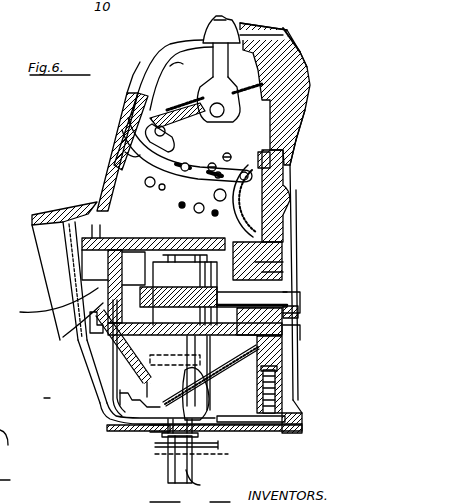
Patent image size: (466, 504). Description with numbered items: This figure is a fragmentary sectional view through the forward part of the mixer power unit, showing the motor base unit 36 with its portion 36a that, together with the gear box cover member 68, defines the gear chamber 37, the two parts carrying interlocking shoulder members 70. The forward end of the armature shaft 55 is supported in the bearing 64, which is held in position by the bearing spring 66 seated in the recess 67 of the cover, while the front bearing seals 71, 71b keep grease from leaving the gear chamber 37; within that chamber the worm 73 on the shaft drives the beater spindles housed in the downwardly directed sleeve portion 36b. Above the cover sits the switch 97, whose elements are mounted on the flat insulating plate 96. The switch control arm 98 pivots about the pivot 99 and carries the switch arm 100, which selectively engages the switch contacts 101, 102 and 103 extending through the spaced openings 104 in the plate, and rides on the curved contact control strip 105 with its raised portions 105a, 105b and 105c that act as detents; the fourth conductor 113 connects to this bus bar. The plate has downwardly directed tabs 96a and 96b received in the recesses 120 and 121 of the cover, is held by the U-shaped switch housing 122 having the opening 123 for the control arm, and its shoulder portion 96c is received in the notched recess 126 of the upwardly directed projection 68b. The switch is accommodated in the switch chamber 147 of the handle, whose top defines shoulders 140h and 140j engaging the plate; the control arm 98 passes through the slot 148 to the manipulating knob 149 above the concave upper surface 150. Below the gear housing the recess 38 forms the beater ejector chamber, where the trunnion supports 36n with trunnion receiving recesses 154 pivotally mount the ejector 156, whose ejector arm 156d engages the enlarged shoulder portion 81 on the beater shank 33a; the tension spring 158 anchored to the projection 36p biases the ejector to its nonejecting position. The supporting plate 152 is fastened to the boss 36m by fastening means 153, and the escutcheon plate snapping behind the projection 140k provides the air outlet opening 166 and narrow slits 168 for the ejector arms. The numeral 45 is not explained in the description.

The slot 148 is at (187, 60).
The manipulating knob 149 is at (217, 24).
The concave upper surface of handle 150 is at (241, 29).
The switch housing 122 is at (293, 50).
The shoulder 140j is at (302, 62).
The insulating plate 96 is at (309, 87).
The switch 97 is at (296, 106).
The notched recess 126 is at (294, 120).
The shoulder portion 96c is at (288, 156).
The upwardly directed projection 68b is at (272, 165).
The fourth conductor 113 is at (272, 200).
The shoulder 140h is at (126, 98).
The switch chamber 147 is at (130, 106).
The curved contact control strip 105 is at (140, 133).
The raised portion 105a is at (128, 154).
The raised portion 105b is at (182, 172).
The raised portion 105c is at (216, 178).
The opening 123 is at (173, 75).
The pivot 99 is at (218, 99).
The switch control arm 98 is at (224, 74).
The switch arm 100 is at (175, 125).
The switch contact 102 is at (222, 150).
The switch contact 103 is at (216, 165).
The spaced openings 104 is at (222, 174).
The switch contact 101 is at (160, 188).
The tab 96a is at (88, 215).
The recess 120 is at (114, 242).
The gear box cover member 68 is at (150, 237).
The recess 121 is at (230, 222).
The front bearing seal 71 is at (284, 244).
The recess 67 is at (284, 258).
The bearing spring 66 is at (284, 268).
The bearing 64 is at (300, 297).
The armature shaft 55 is at (298, 310).
The bearing 71b is at (300, 333).
The projection 140k is at (66, 232).
The gear chamber 37 is at (127, 267).
The worm 73 is at (185, 290).
The tab 96b is at (272, 296).
The air outlet opening 166 is at (76, 300).
The interlocking shoulder members 70 is at (59, 305).
The portion of base unit 36a is at (86, 340).
The projection 36p is at (112, 372).
The recess 38 is at (122, 378).
The trunnion supports 36n is at (31, 400).
The trunnion receiving recesses 154 is at (120, 391).
The ejector arm 156d is at (148, 431).
The shank 33a is at (166, 478).
The tension spring 158 is at (152, 352).
The ejector 156 is at (200, 368).
The enlarged shoulder portion 81 is at (216, 455).
The supporting plate 152 is at (252, 424).
The narrow slits 168 is at (196, 477).
The boss 36m is at (290, 357).
The fastening means 153 is at (277, 390).
The motor base unit 36 is at (304, 433).
The member 45 is at (9, 444).
The sleeve portion 36b is at (9, 485).